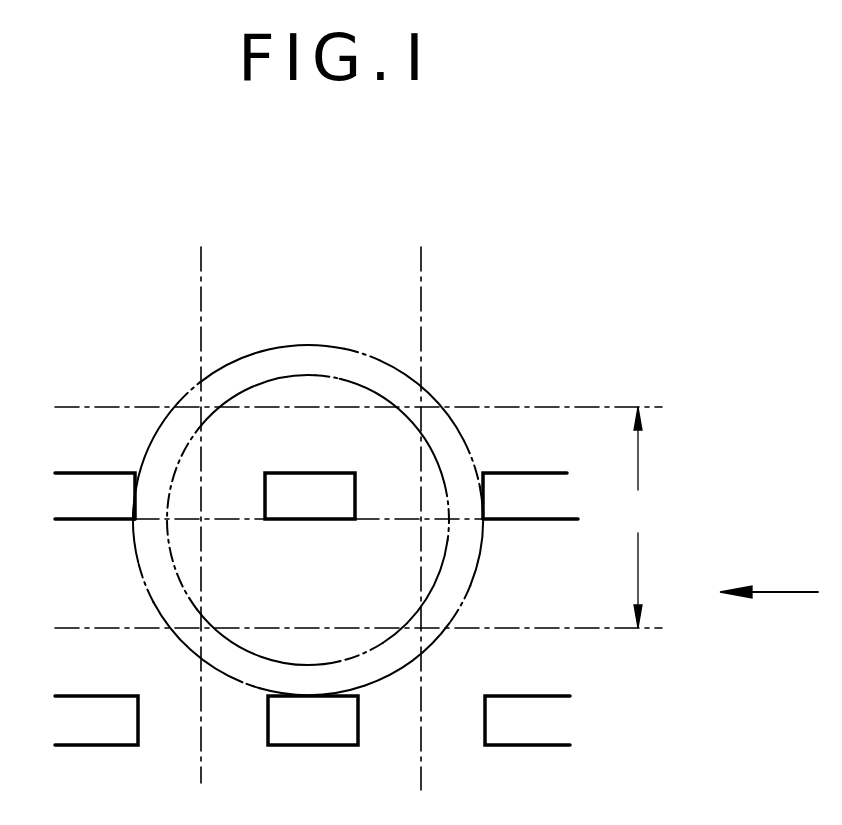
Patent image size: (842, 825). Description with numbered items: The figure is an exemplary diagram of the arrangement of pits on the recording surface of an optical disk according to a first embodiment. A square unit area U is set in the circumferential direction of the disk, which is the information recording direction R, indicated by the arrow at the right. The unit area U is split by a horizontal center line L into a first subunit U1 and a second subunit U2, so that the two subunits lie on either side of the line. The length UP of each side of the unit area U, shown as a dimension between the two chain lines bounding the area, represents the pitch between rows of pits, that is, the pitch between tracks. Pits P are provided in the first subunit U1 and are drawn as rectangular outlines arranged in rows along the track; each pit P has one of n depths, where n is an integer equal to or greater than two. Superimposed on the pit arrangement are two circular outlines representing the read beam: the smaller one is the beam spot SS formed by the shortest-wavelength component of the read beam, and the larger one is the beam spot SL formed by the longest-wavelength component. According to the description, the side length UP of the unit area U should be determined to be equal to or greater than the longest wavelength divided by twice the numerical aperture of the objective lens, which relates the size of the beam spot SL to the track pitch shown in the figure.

The unit area U is at (287, 360).
The first subunit U1 is at (250, 437).
The second subunit U2 is at (222, 583).
The beam spot of the longest wavelength SL is at (342, 347).
The beam spot of the shortest wavelength SS is at (447, 550).
The pits P is at (93, 477).
The center line L is at (301, 522).
The length of each side of the unit area UP is at (648, 517).
The information recording direction R is at (769, 575).